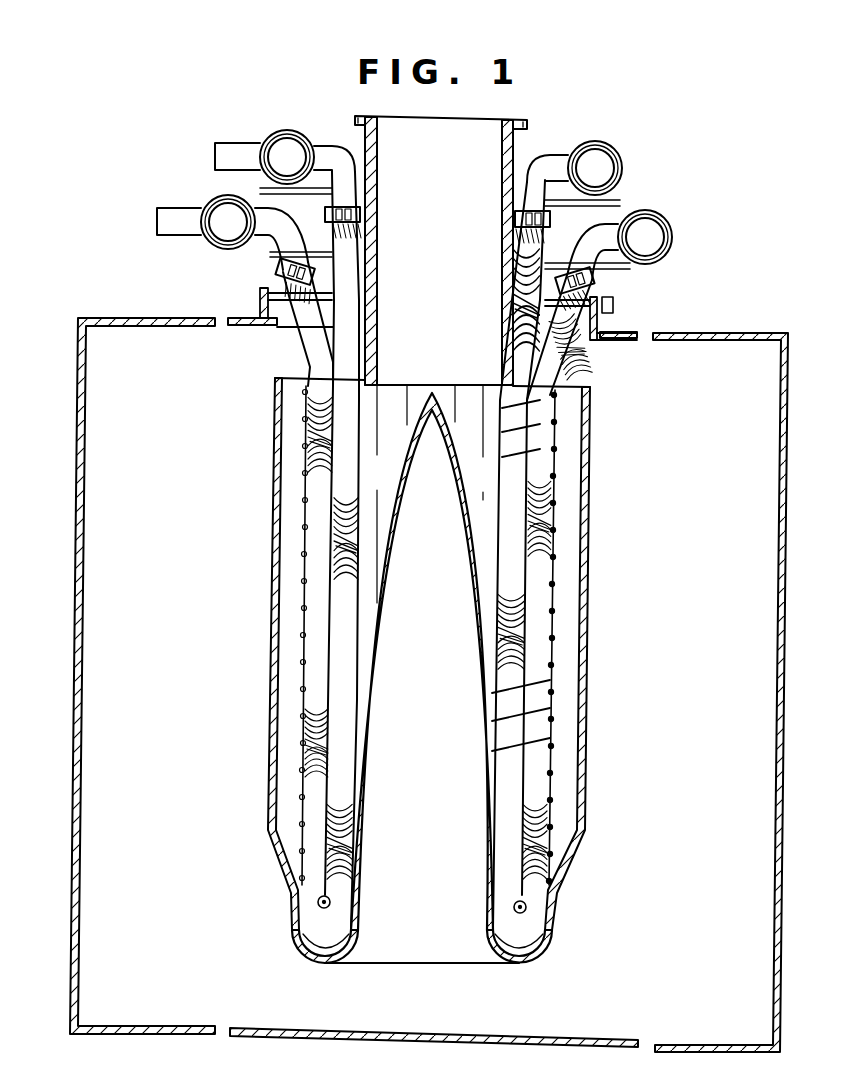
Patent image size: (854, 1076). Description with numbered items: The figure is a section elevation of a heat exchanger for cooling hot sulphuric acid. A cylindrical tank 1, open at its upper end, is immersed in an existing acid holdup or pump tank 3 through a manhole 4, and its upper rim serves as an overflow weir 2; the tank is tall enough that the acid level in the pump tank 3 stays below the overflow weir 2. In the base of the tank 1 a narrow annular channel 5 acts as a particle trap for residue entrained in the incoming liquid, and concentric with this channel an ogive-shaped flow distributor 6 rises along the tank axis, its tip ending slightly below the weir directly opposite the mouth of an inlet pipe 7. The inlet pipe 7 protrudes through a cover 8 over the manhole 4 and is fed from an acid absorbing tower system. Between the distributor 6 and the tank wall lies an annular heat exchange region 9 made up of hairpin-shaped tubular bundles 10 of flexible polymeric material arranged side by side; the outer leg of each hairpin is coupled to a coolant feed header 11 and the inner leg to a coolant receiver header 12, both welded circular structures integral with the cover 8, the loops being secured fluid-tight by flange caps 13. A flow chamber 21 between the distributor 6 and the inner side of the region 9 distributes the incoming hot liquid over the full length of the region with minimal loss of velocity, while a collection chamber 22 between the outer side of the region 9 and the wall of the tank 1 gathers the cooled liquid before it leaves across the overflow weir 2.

The cylindrical tank 1 is at (276, 517).
The overflow weir 2 is at (275, 377).
The pump tank 3 is at (80, 486).
The manhole 4 is at (262, 310).
The annular channel 5 is at (312, 946).
The ogive-shaped flow distributor 6 is at (372, 656).
The inlet pipe 7 is at (378, 141).
The manhole cover 8 is at (262, 290).
The annular heat exchange region 9 is at (350, 645).
The hairpin-shaped tubular bundle 10 is at (303, 328).
The coolant feed header 11 is at (215, 208).
The coolant receiver header 12 is at (275, 147).
The flange cap 13 is at (325, 212).
The flow chamber 21 is at (390, 485).
The collection chamber 22 is at (290, 705).